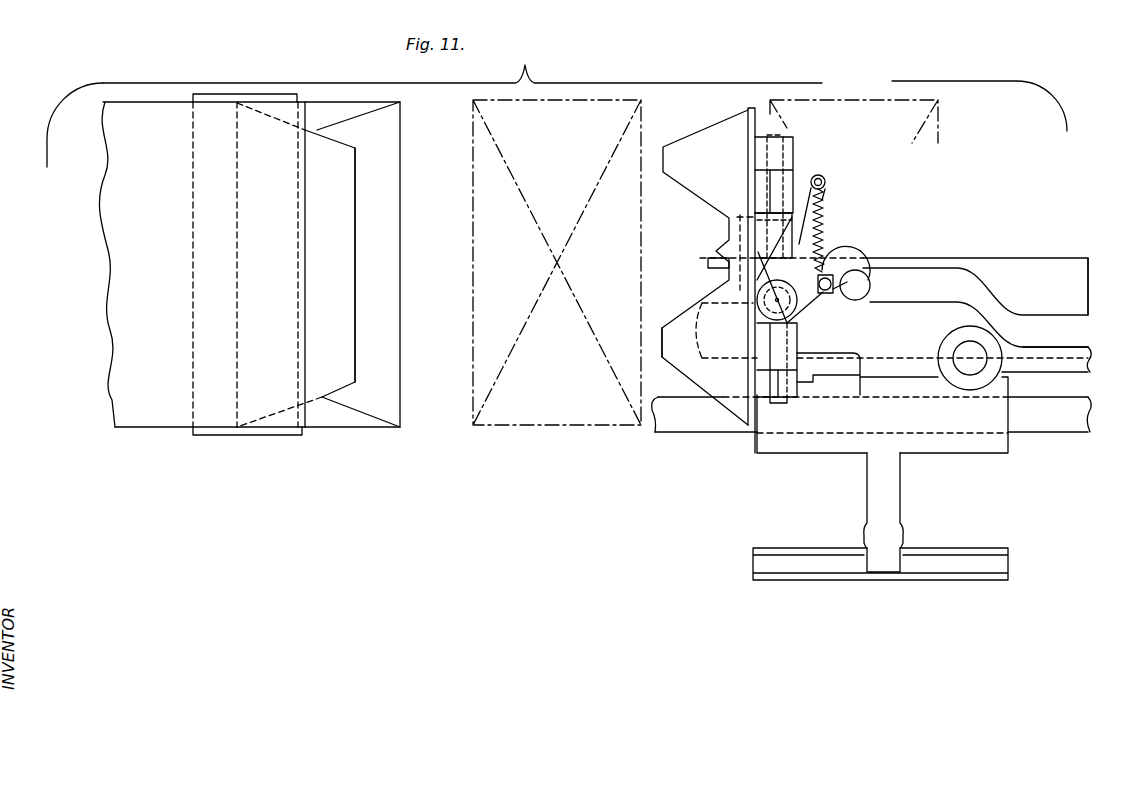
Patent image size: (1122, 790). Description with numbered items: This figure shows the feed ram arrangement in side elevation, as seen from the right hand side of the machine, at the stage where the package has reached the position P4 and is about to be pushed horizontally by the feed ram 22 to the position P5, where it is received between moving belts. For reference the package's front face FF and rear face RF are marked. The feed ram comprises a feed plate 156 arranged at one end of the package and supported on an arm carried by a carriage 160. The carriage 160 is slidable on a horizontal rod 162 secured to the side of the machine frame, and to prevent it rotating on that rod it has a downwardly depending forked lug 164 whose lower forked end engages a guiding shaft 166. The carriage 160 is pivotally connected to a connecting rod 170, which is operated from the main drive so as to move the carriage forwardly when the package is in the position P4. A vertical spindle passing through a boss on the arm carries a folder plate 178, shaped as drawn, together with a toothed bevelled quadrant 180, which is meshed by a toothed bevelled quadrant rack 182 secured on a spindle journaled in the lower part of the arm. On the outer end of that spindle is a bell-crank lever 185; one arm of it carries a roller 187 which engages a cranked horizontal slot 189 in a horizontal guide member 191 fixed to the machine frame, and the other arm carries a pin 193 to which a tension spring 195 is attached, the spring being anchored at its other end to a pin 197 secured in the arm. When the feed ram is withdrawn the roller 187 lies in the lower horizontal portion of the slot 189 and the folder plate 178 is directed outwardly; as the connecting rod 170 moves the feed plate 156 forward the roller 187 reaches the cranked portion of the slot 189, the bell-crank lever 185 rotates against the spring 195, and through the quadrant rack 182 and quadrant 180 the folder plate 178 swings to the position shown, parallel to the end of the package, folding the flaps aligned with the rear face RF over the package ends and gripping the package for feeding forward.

The feed ram 22 is at (298, 112).
The rear face RF is at (380, 191).
The front face FF is at (495, 268).
The position P5 is at (340, 413).
The position P4 is at (823, 115).
The folder plate 178 is at (682, 190).
The toothed bevelled quadrant 180 is at (735, 222).
The toothed bevelled quadrant rack 182 is at (712, 254).
The feed plate 156 is at (754, 328).
The pin 193 is at (821, 174).
The tension spring 195 is at (826, 219).
The bell-crank lever 185 is at (808, 238).
The roller 187 is at (873, 285).
The cranked horizontal slot 189 is at (926, 264).
The horizontal guide member 191 is at (1013, 265).
The pin 197 is at (830, 294).
The connecting rod 170 is at (1063, 367).
The horizontal rod 162 is at (700, 426).
The carriage 160 is at (973, 422).
The forked lug 164 is at (880, 495).
The guiding shaft 166 is at (788, 563).